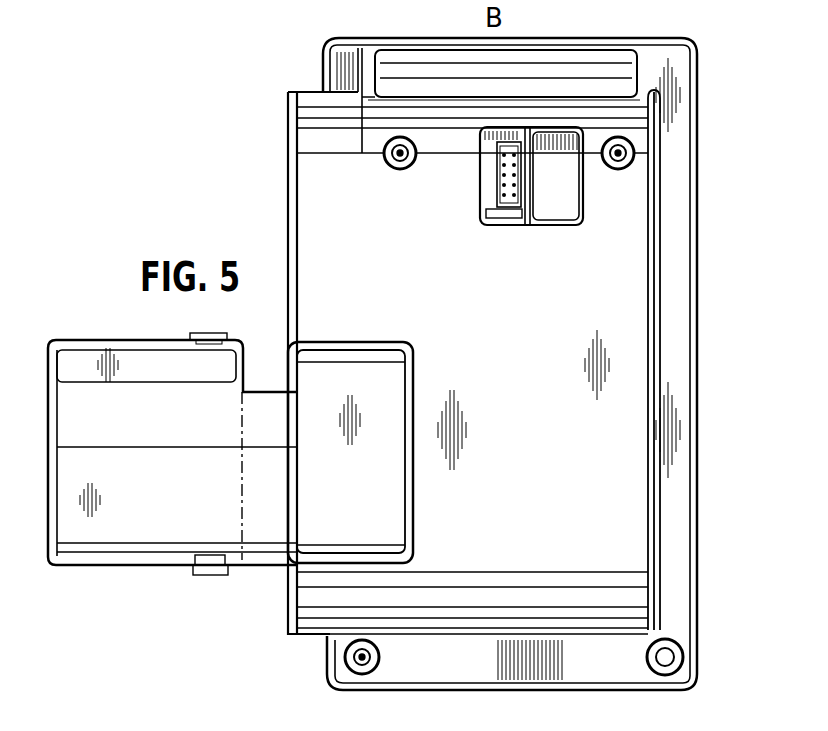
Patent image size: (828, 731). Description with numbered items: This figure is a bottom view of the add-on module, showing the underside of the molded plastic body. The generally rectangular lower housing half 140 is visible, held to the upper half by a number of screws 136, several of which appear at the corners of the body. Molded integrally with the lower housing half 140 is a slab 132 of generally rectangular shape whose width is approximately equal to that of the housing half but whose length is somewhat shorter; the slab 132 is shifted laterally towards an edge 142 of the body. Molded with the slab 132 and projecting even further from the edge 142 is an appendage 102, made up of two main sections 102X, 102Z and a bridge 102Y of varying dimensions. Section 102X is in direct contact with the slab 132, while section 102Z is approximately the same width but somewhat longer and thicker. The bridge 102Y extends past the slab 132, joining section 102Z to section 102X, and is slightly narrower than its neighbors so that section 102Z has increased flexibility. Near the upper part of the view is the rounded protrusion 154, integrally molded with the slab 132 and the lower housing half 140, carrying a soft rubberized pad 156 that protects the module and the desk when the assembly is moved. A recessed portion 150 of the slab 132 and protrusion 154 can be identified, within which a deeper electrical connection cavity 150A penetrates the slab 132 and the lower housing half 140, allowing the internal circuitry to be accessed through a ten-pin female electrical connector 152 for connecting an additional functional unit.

The appendage 102 is at (88, 582).
The section 102X is at (393, 510).
The bridge 102Y is at (268, 535).
The section 102Z is at (188, 510).
The slab 132 is at (630, 328).
The screws 136 is at (388, 168).
The lower housing half 140 is at (677, 255).
The edge 142 is at (310, 63).
The recessed portion 150 is at (545, 225).
The electrical connection cavity 150A is at (507, 220).
The ten-pin female electrical connector 152 is at (502, 180).
The rounded protrusion 154 is at (408, 107).
The soft rubberized pad 156 is at (554, 62).